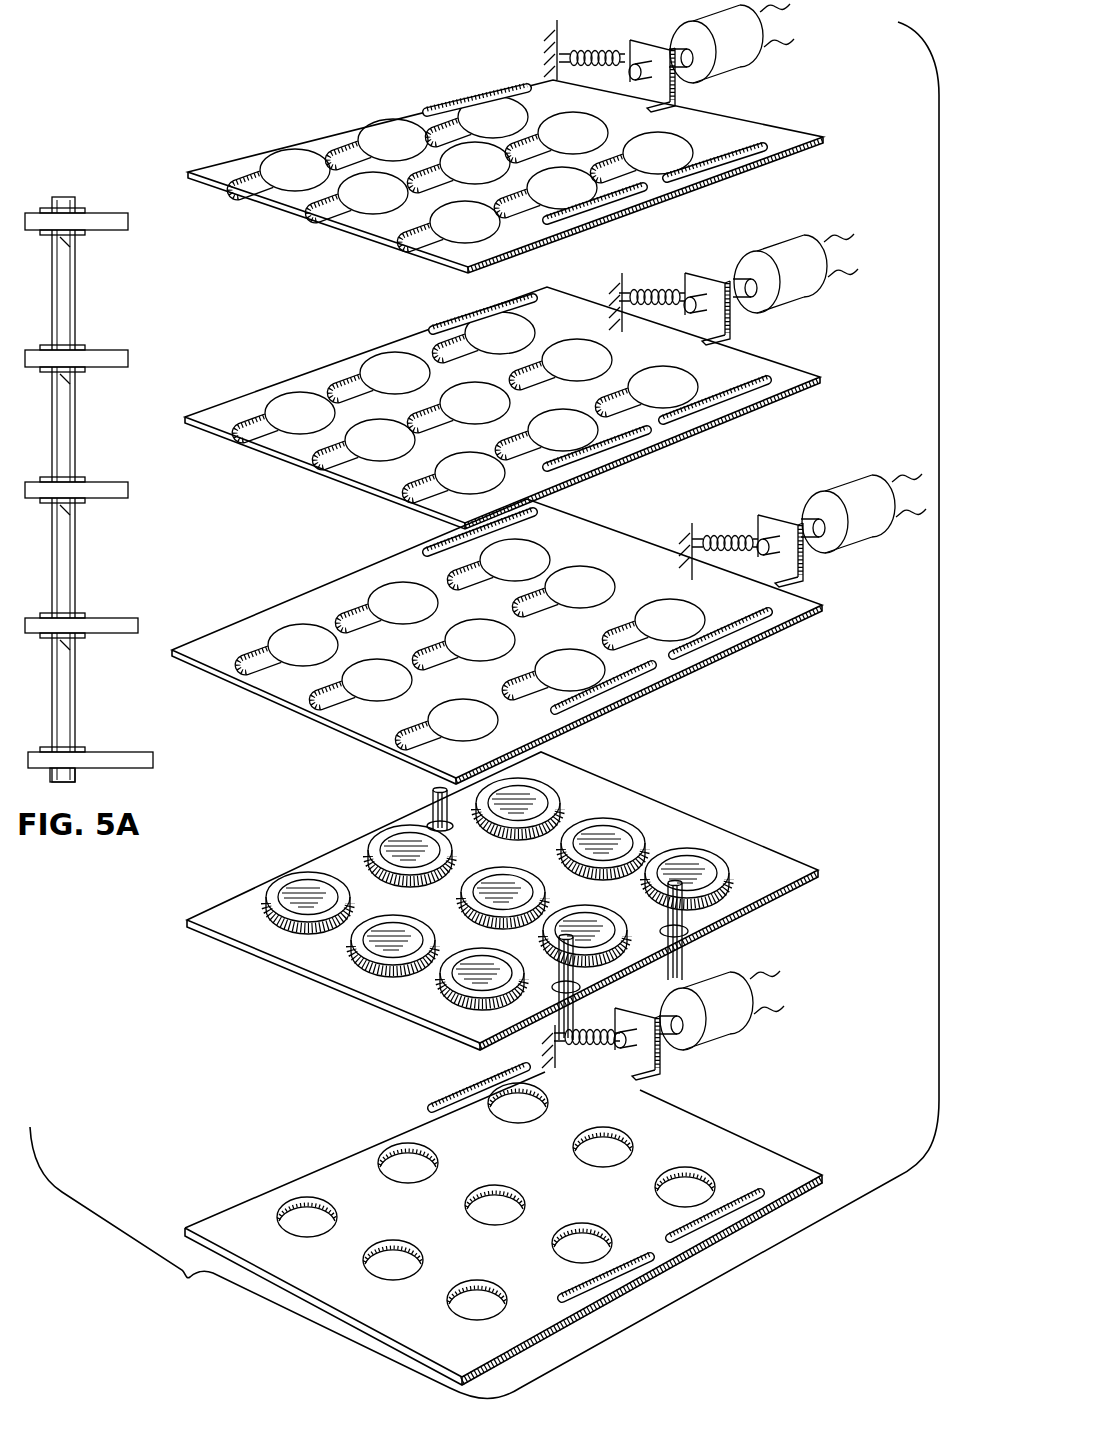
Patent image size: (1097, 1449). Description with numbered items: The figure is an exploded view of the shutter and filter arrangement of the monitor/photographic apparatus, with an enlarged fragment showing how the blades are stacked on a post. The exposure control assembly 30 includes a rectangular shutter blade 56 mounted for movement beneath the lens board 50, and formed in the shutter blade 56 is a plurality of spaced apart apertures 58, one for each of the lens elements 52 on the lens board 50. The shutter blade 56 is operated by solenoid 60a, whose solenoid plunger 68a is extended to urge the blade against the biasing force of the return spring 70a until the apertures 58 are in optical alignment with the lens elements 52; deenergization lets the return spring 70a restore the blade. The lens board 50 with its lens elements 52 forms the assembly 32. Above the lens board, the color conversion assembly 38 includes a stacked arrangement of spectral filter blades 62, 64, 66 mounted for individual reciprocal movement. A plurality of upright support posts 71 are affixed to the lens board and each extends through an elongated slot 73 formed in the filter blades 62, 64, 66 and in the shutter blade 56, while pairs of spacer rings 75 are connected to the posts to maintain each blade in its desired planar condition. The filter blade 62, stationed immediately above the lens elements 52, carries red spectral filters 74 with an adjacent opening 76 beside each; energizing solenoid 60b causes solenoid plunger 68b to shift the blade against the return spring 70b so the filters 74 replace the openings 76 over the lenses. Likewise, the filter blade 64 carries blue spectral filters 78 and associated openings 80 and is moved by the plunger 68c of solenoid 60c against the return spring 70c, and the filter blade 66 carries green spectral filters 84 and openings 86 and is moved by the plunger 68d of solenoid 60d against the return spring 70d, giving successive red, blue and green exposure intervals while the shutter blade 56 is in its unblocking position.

In FIG. 5, the exposure control assembly 30 is at (783, 979).
In FIG. 5, the container support plate assembly 32 is at (699, 810).
In FIG. 5, the color conversion assembly 38 is at (268, 141).
In FIG. 5, the lens board 50 is at (760, 863).
In FIG. 5A, the lens board 50 is at (130, 617).
In FIG. 5, the lens elements 52 is at (380, 920).
In FIG. 5, the shutter blade 56 is at (258, 1187).
In FIG. 5A, the shutter blade 56 is at (130, 758).
In FIG. 5, the apertures 58 is at (497, 1187).
In FIG. 5, the solenoid 60a is at (743, 1010).
In FIG. 5, the solenoid 60b is at (868, 528).
In FIG. 5, the solenoid 60c is at (805, 278).
In FIG. 5, the solenoid 60d is at (742, 62).
In FIG. 5, the filter blade 62 is at (323, 587).
In FIG. 5A, the filter blade 62 is at (110, 485).
In FIG. 5, the filter blade 64 is at (267, 387).
In FIG. 5A, the filter blade 64 is at (120, 348).
In FIG. 5, the filter blade 66 is at (547, 77).
In FIG. 5A, the filter blade 66 is at (122, 215).
In FIG. 5, the solenoid plunger 68a is at (690, 1040).
In FIG. 5, the solenoid plunger 68b is at (812, 540).
In FIG. 5, the plunger 68c is at (753, 295).
In FIG. 5, the plunger 68d is at (678, 50).
In FIG. 5, the return spring 70a is at (600, 1023).
In FIG. 5, the return spring 70b is at (718, 535).
In FIG. 5, the return spring 70c is at (645, 292).
In FIG. 5, the return spring 70d is at (592, 50).
In FIG. 5, the upright support posts 71 is at (432, 800).
In FIG. 5A, the upright support posts 71 is at (67, 282).
In FIG. 5, the elongated slot 73 is at (493, 88).
In FIG. 5, the red spectral filters 74 is at (493, 560).
In FIG. 5A, the spacer rings 75 is at (80, 212).
In FIG. 5, the openings 76 is at (522, 607).
In FIG. 5, the blue spectral filters 78 is at (465, 397).
In FIG. 5, the openings 80 is at (618, 403).
In FIG. 5, the green spectral filters 84 is at (458, 160).
In FIG. 5, the openings 86 is at (605, 165).